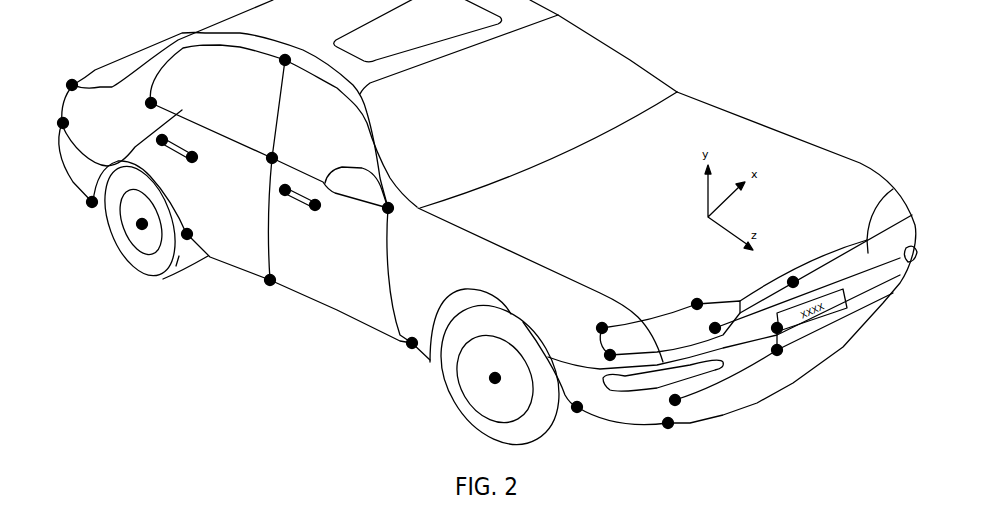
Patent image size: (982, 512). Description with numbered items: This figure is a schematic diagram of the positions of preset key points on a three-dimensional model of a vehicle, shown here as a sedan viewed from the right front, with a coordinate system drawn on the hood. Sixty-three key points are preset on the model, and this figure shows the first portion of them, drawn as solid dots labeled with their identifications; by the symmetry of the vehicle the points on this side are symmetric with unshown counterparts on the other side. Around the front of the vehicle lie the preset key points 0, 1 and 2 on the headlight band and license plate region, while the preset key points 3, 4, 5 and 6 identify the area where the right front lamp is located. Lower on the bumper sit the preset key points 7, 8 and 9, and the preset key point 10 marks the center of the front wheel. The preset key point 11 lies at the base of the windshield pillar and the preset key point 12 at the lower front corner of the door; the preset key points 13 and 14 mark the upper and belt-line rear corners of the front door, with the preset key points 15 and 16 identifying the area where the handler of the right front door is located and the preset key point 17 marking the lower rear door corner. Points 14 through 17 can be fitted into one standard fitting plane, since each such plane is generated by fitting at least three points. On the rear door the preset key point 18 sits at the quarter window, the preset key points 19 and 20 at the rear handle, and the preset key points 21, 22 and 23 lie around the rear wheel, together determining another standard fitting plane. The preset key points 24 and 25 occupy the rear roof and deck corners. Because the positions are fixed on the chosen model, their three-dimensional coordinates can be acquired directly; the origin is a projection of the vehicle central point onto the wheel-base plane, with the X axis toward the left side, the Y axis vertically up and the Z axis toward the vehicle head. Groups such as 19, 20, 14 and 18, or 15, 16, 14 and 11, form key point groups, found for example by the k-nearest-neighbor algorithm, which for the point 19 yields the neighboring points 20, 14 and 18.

The preset key point 0 is at (792, 273).
The preset key point 1 is at (771, 333).
The preset key point 2 is at (783, 357).
The preset key point 3 is at (692, 298).
The preset key point 4 is at (707, 329).
The preset key point 5 is at (597, 322).
The preset key point 6 is at (600, 360).
The preset key point 7 is at (682, 403).
The preset key point 8 is at (661, 422).
The preset key point 9 is at (575, 398).
The preset key point 10 is at (491, 371).
The preset key point 11 is at (397, 217).
The preset key point 12 is at (416, 334).
The preset key point 13 is at (273, 67).
The preset key point 14 is at (265, 151).
The preset key point 15 is at (323, 216).
The preset key point 16 is at (282, 203).
The preset key point 17 is at (278, 272).
The preset key point 18 is at (159, 97).
The preset key point 19 is at (198, 166).
The preset key point 20 is at (154, 149).
The preset key point 21 is at (183, 226).
The preset key point 22 is at (138, 217).
The preset key point 23 is at (89, 213).
The preset key point 24 is at (68, 77).
The preset key point 25 is at (73, 123).